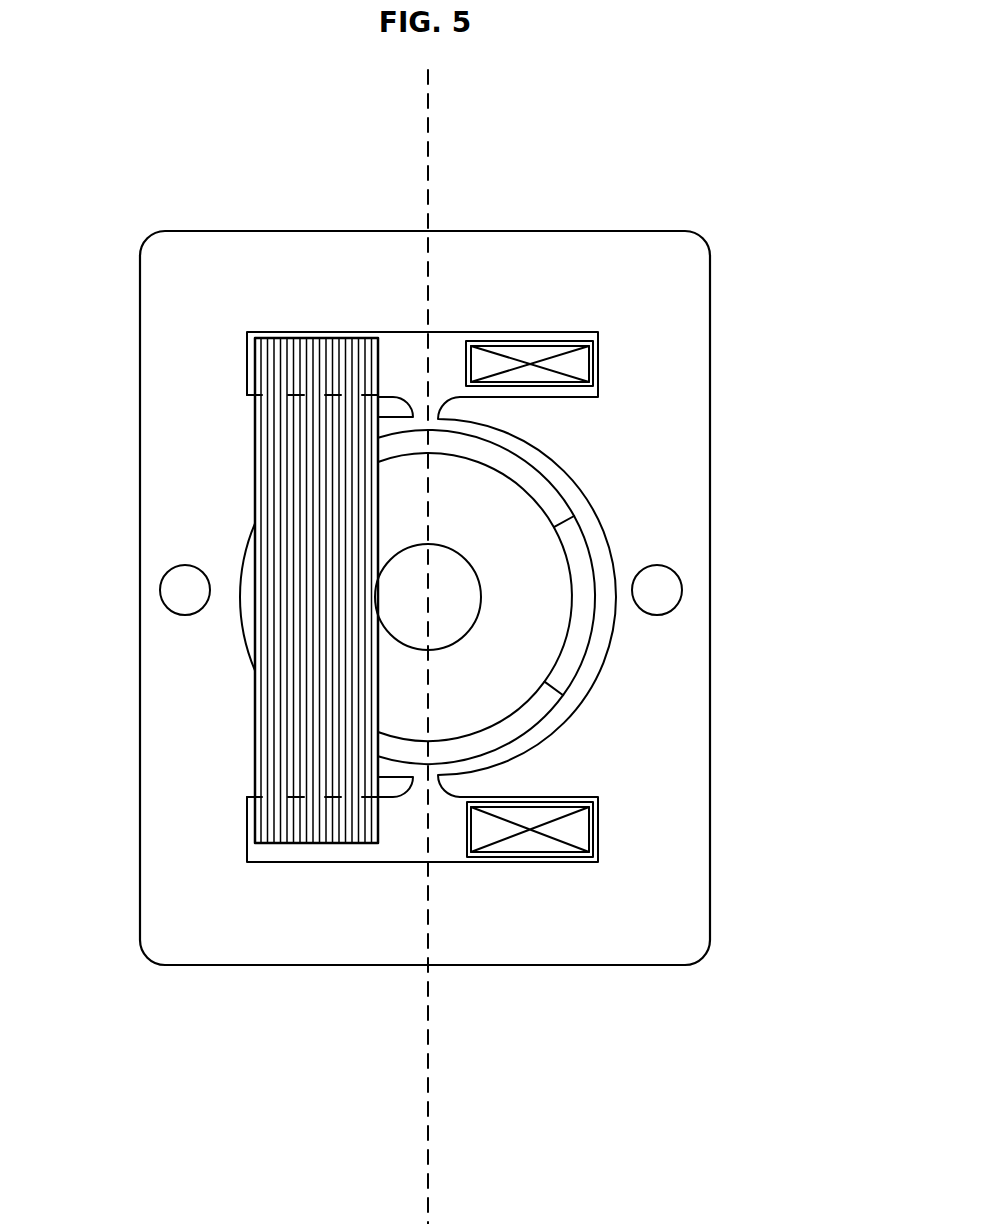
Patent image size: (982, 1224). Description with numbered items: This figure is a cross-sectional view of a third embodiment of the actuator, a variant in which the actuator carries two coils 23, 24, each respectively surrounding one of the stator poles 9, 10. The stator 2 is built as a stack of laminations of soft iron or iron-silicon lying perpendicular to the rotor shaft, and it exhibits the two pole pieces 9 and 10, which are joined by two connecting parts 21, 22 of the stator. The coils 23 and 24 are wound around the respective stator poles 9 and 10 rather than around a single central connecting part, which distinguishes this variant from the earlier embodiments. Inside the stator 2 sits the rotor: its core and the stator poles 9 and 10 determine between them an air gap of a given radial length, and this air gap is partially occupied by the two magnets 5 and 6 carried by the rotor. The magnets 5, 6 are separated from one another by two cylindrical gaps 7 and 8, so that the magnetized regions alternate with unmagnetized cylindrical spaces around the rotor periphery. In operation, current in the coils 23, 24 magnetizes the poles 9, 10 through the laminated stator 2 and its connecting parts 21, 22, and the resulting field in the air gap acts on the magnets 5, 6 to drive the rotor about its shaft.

The stator 2 is at (188, 415).
The magnet 5 is at (535, 487).
The magnet 6 is at (510, 727).
The cylindrical gap 7 is at (575, 652).
The cylindrical gap 8 is at (257, 688).
The stator pole 9 is at (658, 487).
The stator pole 10 is at (167, 660).
The connecting part 21 is at (510, 305).
The connecting part 22 is at (505, 905).
The coil 23 is at (570, 368).
The coil 24 is at (583, 832).